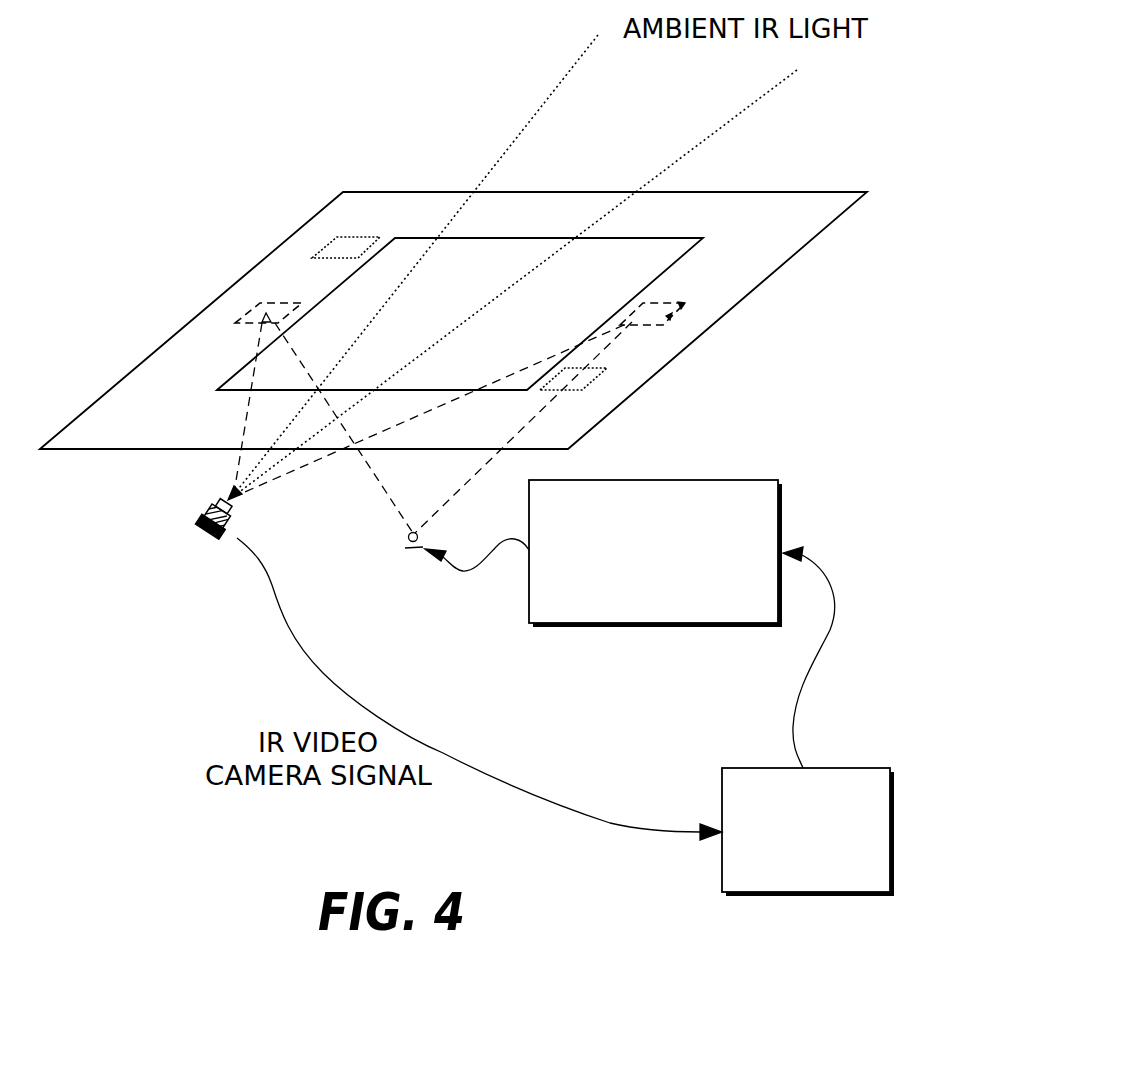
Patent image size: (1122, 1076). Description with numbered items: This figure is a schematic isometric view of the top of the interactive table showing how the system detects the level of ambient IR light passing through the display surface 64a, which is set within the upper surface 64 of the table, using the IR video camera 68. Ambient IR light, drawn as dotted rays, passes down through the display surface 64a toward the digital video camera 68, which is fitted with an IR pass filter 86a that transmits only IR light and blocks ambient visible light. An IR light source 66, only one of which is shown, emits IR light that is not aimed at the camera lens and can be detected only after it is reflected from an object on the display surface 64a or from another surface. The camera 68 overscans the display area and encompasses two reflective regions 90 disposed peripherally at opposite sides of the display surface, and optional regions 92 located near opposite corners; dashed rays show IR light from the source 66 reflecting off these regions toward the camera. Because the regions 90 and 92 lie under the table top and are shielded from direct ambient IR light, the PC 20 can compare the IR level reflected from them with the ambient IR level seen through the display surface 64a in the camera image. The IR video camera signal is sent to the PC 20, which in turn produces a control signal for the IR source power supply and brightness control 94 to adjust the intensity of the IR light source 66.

The PC 20 is at (894, 822).
The upper surface 64 is at (147, 357).
The display surface 64a is at (665, 265).
The IR light source 66 is at (408, 540).
The digital video camera 68 is at (203, 530).
The IR pass filter 86a is at (220, 493).
The regions 90 is at (254, 307).
The optional regions 92 is at (334, 242).
The IR source power supply and brightness control 94 is at (780, 505).